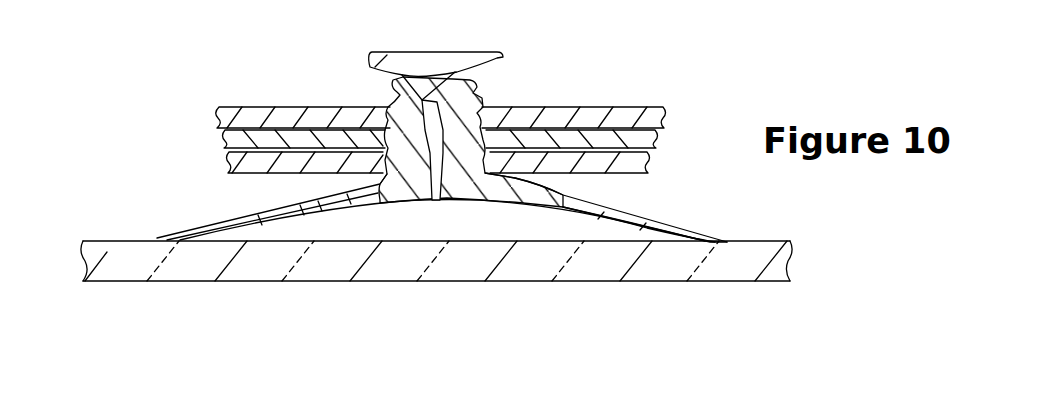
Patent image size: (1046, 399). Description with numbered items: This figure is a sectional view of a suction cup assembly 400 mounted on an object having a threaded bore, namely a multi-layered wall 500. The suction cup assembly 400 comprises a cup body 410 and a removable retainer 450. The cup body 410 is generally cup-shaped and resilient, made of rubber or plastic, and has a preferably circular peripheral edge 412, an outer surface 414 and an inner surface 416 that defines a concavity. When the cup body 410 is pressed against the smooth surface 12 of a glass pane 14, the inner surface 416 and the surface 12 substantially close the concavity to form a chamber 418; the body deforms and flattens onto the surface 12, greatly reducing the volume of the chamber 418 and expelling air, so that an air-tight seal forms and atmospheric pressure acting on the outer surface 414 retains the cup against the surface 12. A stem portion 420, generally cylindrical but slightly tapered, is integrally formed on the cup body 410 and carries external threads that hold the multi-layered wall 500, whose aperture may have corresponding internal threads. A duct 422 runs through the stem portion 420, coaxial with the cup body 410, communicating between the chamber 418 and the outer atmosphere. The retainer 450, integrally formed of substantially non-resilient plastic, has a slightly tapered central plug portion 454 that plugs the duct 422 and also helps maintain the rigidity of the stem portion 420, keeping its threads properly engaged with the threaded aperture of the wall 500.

The suction cup assembly 400 is at (494, 156).
The retainer 450 is at (462, 48).
The central plug portion 454 is at (442, 97).
The stem portion 420 is at (388, 91).
The duct 422 is at (442, 180).
The multi-layered wall 500 is at (640, 110).
The cup body 410 is at (243, 207).
The outer surface 414 is at (620, 206).
The inner surface 416 is at (652, 227).
The chamber 418 is at (532, 232).
The peripheral edge 412 is at (718, 243).
The surface 12 is at (407, 244).
The glass pane 14 is at (540, 267).